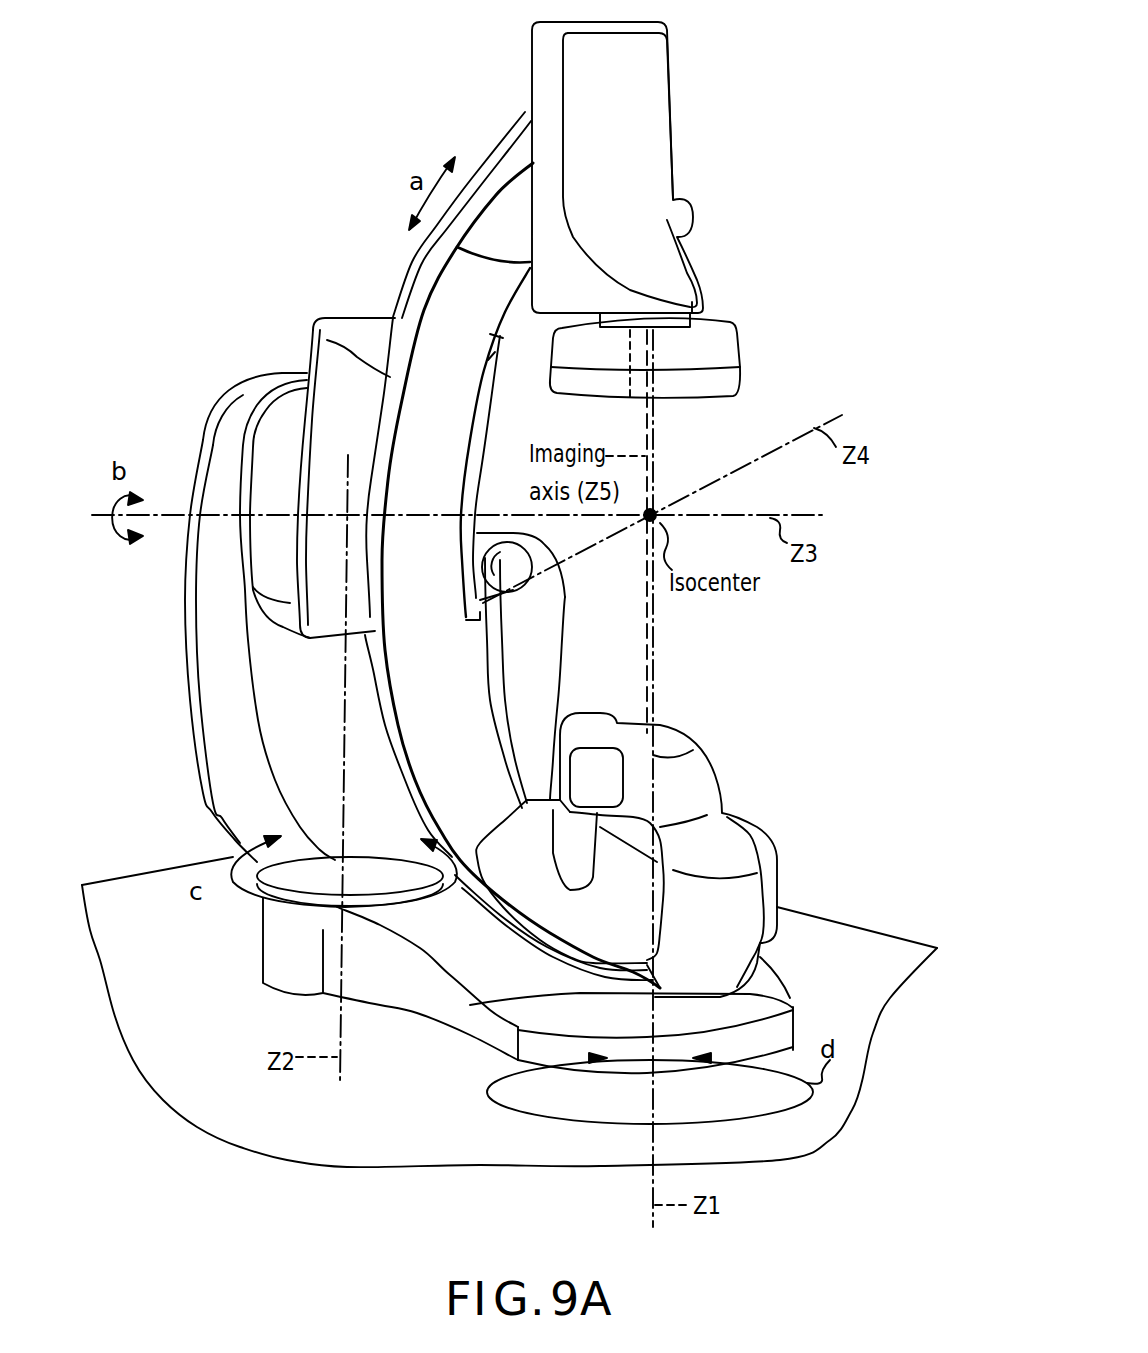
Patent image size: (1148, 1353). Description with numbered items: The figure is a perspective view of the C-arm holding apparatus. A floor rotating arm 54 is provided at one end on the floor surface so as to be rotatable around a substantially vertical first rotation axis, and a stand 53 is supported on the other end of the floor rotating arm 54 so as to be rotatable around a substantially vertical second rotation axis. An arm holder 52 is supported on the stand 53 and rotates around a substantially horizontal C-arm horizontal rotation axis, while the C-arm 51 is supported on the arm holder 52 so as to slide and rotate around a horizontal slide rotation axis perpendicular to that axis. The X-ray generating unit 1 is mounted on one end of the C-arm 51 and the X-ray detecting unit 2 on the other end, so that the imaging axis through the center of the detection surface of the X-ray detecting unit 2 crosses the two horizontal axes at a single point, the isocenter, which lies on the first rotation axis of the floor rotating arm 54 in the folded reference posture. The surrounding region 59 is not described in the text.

The X-ray generating unit 1 is at (703, 788).
The X-ray detecting unit 2 is at (722, 348).
The C-arm 51 is at (503, 152).
The arm holder 52 is at (357, 333).
The stand 53 is at (252, 392).
The floor rotating arm 54 is at (417, 1010).
The floor 59 is at (840, 930).